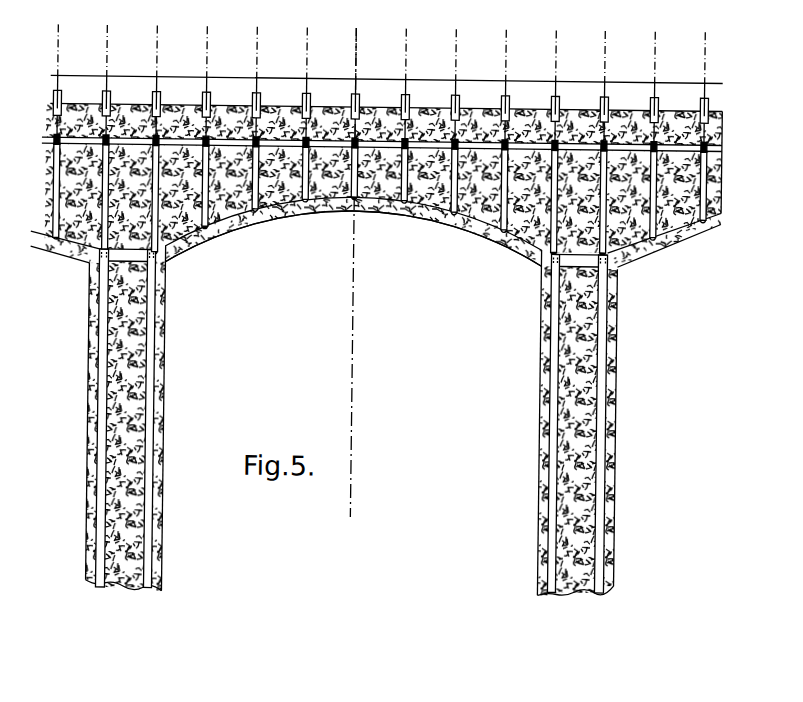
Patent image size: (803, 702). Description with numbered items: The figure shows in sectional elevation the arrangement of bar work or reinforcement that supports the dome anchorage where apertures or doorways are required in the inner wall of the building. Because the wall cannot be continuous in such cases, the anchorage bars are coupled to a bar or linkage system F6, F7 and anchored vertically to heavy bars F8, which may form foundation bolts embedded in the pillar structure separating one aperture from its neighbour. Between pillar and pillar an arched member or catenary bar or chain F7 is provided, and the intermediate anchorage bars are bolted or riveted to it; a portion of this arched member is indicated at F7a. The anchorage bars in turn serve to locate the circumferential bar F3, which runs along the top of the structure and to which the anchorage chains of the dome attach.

The circumferential bar F3 is at (473, 134).
The bar or linkage system F6 is at (123, 259).
The arched member or catenary bar or chain F7 is at (640, 286).
The arch rib inner plate F7a is at (488, 223).
The heavy bars F8 is at (553, 365).